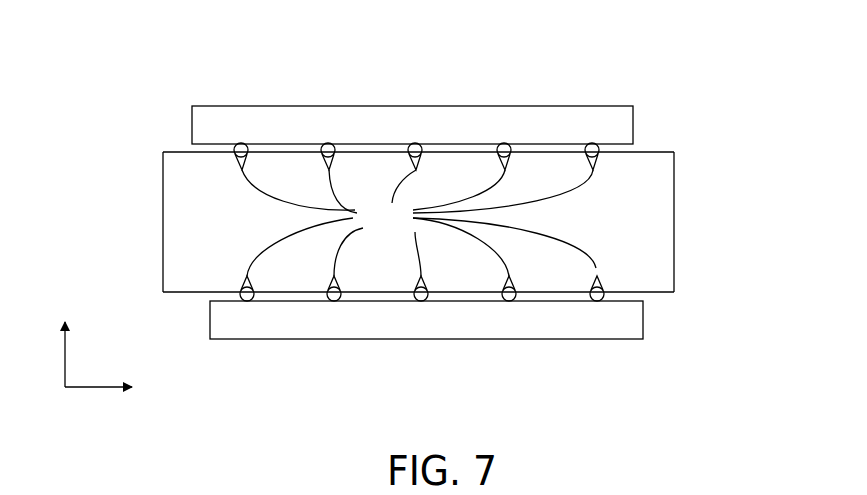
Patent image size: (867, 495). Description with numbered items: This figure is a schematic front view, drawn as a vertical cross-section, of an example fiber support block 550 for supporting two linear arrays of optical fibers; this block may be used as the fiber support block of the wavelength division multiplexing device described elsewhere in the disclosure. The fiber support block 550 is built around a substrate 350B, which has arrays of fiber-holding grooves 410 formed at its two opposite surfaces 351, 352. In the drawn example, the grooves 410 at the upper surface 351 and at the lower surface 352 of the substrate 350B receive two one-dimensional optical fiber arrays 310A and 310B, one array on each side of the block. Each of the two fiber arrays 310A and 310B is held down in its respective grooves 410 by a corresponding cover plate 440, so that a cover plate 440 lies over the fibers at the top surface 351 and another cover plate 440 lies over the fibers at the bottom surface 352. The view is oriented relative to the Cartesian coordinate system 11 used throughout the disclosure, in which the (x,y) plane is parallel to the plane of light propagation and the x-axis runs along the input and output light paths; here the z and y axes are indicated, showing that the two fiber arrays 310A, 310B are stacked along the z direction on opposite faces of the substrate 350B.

The fiber support block 550 is at (428, 61).
The cover plate 440 is at (426, 136).
The substrate 350B is at (187, 231).
The first surface 351 is at (180, 150).
The second surface 352 is at (178, 293).
The first 1D optical fiber array 310A is at (638, 150).
The second 1D optical fiber array 310B is at (646, 300).
The fiber-holding grooves 410 is at (419, 223).
The Cartesian coordinate system 11 is at (44, 398).